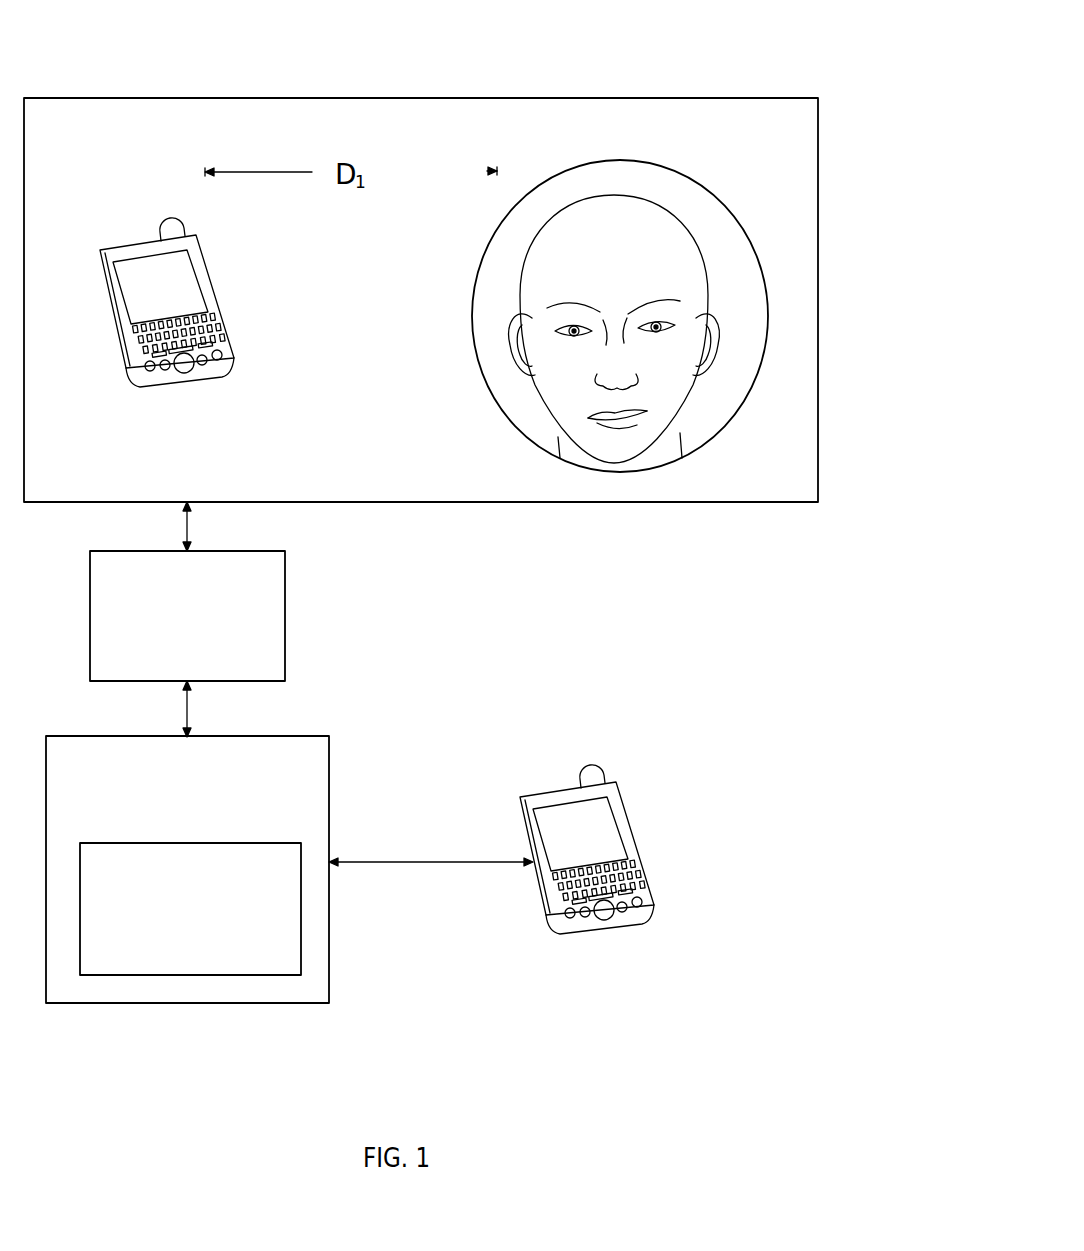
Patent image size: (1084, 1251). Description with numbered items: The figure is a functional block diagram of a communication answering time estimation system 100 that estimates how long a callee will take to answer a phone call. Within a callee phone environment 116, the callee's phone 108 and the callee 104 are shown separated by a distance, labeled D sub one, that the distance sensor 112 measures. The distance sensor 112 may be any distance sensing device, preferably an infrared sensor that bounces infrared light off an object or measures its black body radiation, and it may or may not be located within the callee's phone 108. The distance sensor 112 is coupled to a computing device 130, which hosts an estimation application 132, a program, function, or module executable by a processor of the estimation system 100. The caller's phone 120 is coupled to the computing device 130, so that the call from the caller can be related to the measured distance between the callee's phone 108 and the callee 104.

The communication answering time estimation system 100 is at (765, 20).
The callee 104 is at (737, 218).
The callee's phone 108 is at (180, 248).
The distance sensor 112 is at (167, 657).
The callee phone environment 116 is at (294, 98).
The caller's phone 120 is at (637, 842).
The computing device 130 is at (167, 822).
The estimation application 132 is at (170, 966).